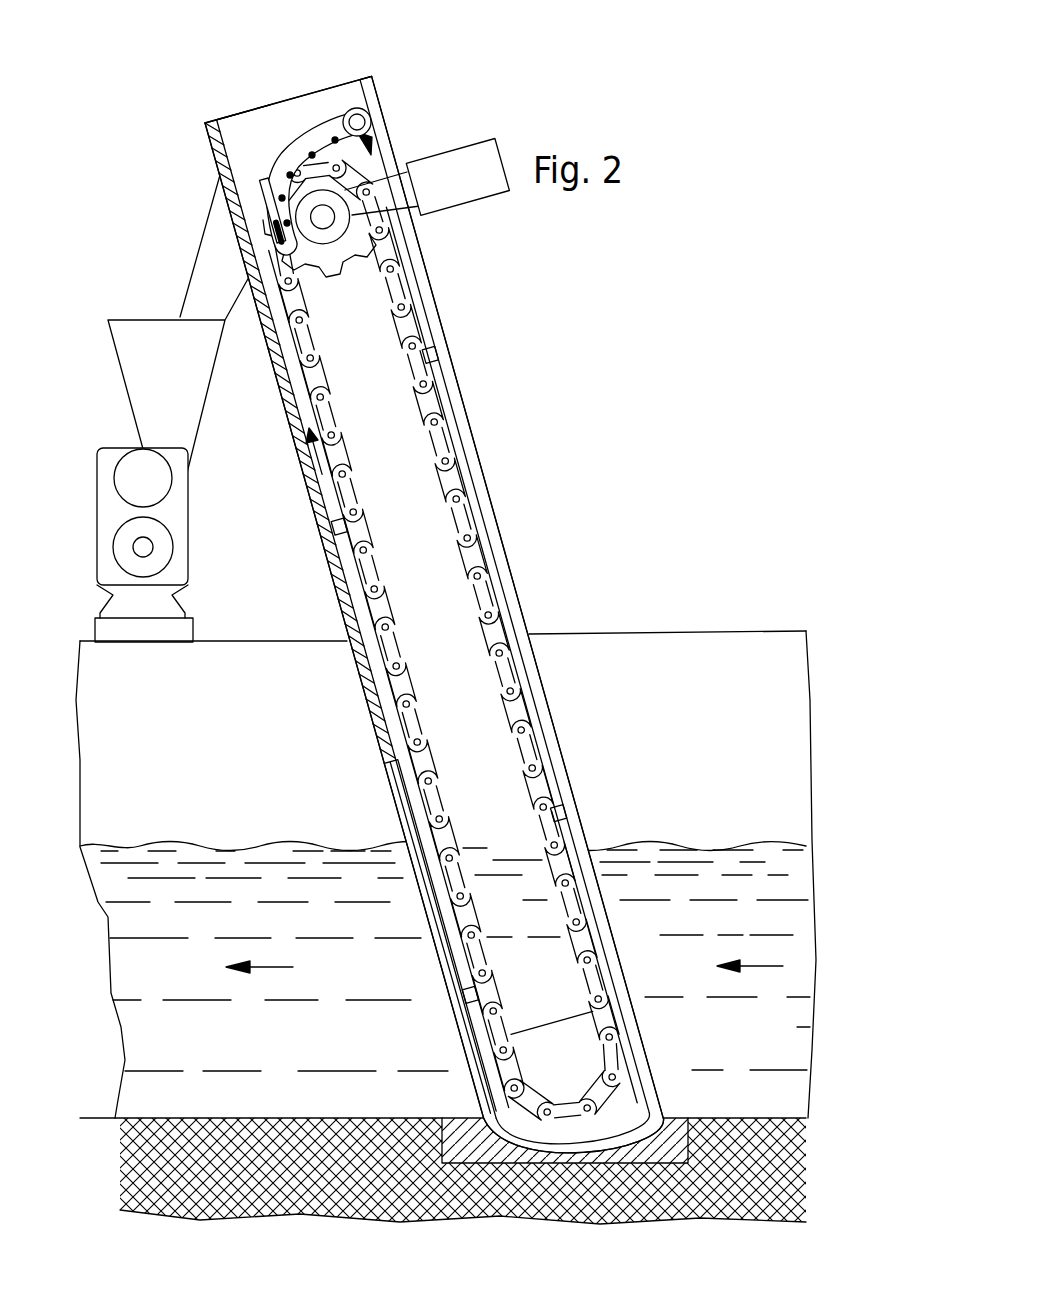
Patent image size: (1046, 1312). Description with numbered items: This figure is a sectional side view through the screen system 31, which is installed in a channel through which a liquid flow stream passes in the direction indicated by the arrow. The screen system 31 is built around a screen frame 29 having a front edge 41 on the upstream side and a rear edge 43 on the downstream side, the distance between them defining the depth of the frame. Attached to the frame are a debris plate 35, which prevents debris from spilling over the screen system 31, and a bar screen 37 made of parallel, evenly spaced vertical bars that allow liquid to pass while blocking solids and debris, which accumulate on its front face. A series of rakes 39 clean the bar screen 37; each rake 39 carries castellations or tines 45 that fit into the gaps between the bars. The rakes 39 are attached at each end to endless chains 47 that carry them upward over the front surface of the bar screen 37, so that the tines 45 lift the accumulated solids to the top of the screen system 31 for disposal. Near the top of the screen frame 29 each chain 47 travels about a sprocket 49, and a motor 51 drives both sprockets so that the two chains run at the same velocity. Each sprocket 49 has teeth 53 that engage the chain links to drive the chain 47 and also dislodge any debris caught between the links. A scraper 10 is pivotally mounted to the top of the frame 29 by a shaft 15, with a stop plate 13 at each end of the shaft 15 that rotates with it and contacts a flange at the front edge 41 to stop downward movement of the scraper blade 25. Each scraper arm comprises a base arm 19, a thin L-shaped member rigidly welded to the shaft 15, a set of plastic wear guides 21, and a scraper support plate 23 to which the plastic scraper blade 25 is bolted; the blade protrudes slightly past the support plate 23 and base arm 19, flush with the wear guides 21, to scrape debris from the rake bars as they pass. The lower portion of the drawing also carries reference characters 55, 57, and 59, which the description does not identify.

The scraper 10 is at (319, 118).
The stop plate 13 is at (373, 82).
The shaft 15 is at (368, 121).
The base arm 19 is at (281, 155).
The plastic wear guides 21 is at (277, 160).
The scraper support plate 23 is at (262, 200).
The scraper blade 25 is at (270, 226).
The screen frame 29 is at (341, 80).
The screen system 31 is at (167, 103).
The debris plate 35 is at (351, 668).
The bar screen 37 is at (396, 782).
The rake 39 is at (440, 358).
The front edge 41 is at (488, 479).
The rear edge 43 is at (270, 176).
The tines 45 is at (566, 814).
The endless chain 47 is at (517, 708).
The sprocket 49 is at (352, 243).
The motor 51 is at (484, 139).
The teeth 53 is at (323, 270).
The lower channel bottom 55 is at (550, 1062).
The baffle plate 57 is at (568, 1014).
The bottom guide shoe 59 is at (620, 1104).